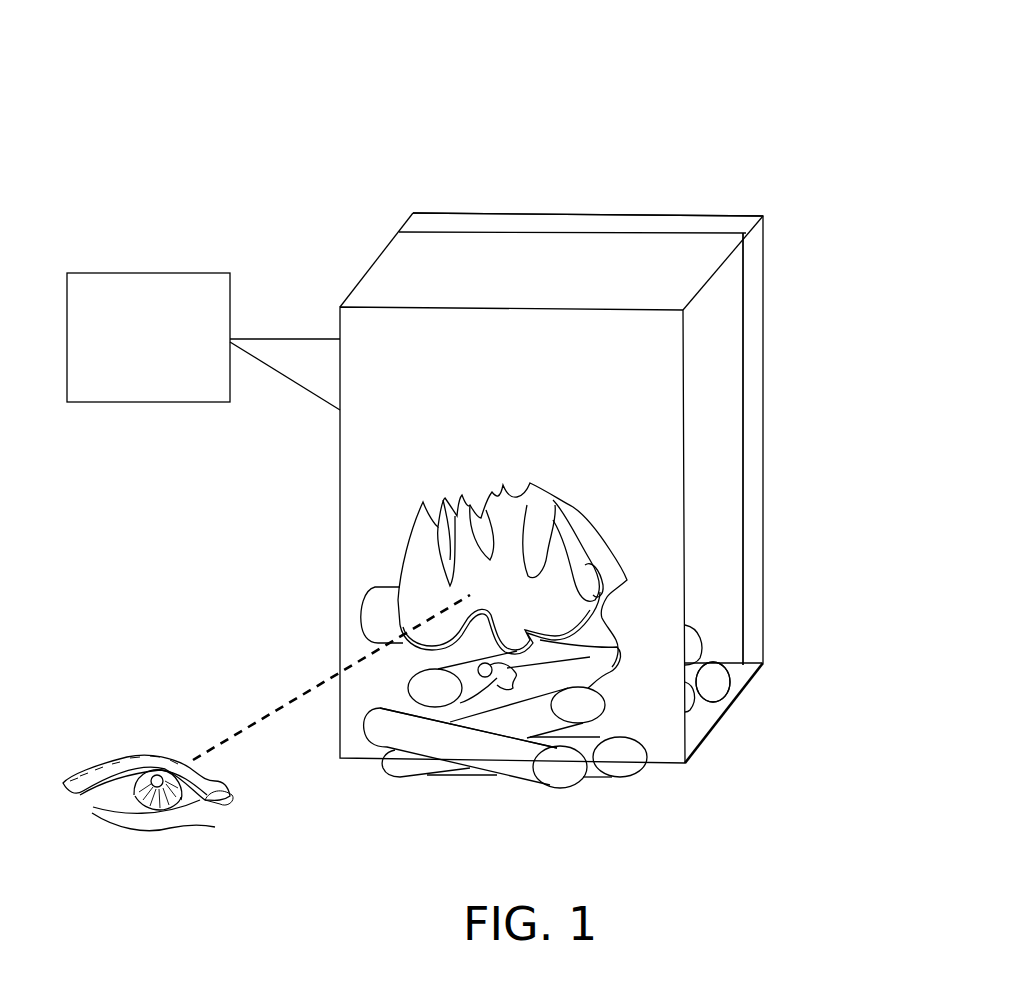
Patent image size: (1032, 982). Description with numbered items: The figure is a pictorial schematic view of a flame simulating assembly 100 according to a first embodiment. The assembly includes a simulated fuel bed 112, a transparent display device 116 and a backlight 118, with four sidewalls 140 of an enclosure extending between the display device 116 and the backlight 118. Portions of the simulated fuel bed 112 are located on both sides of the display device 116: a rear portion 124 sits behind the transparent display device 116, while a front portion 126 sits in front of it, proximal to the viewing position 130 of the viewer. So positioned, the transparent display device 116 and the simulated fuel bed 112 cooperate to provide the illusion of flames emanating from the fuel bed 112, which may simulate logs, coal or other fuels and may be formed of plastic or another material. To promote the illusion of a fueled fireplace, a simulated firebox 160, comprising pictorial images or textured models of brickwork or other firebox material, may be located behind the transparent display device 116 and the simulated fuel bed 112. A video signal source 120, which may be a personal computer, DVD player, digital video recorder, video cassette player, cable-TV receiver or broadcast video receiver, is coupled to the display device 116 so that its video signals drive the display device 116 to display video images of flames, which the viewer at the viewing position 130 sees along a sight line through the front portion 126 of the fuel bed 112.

The flame simulating assembly 100 is at (793, 122).
The simulated fuel bed 112 is at (712, 755).
The transparent display device 116 is at (373, 443).
The backlight 118 is at (757, 288).
The video signal source 120 is at (203, 341).
The rear portion 124 is at (708, 678).
The front portion 126 is at (463, 742).
The viewing position 130 is at (130, 797).
The sidewalls 140 is at (535, 265).
The simulated firebox 160 is at (717, 472).